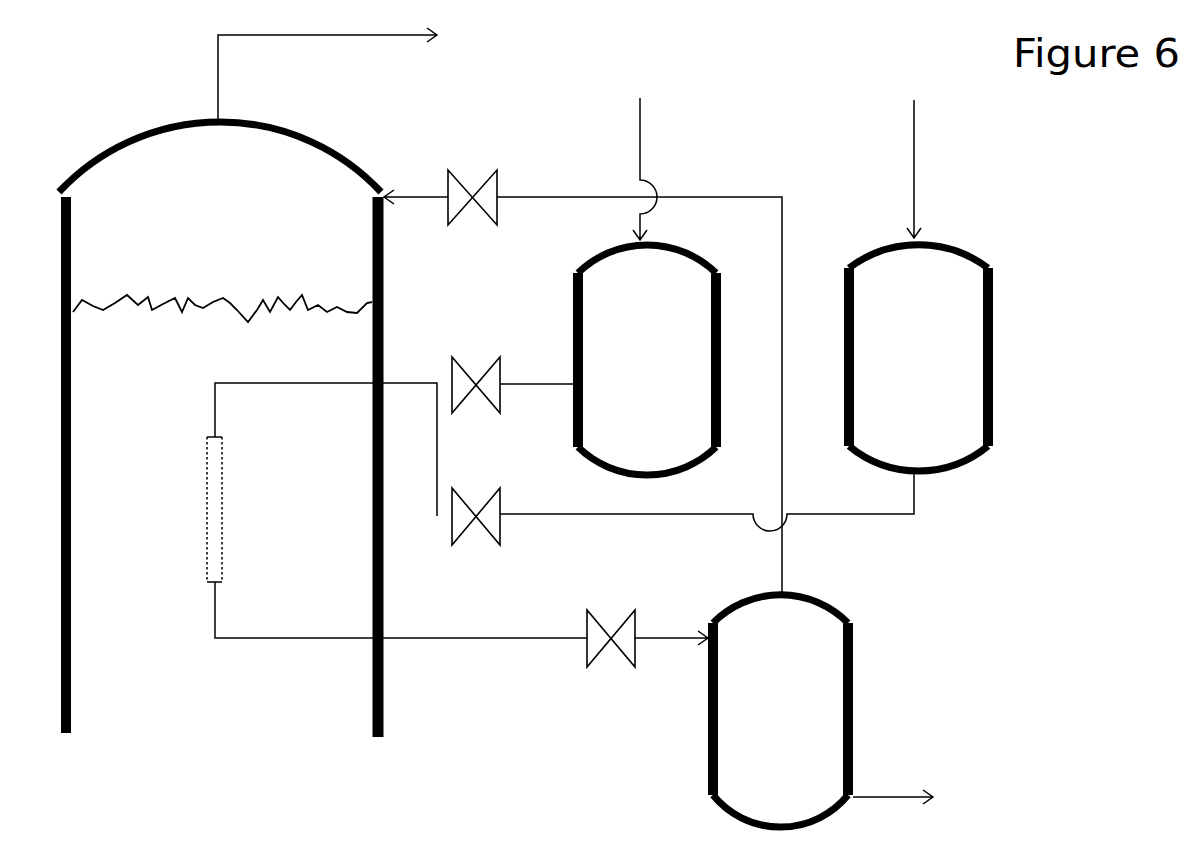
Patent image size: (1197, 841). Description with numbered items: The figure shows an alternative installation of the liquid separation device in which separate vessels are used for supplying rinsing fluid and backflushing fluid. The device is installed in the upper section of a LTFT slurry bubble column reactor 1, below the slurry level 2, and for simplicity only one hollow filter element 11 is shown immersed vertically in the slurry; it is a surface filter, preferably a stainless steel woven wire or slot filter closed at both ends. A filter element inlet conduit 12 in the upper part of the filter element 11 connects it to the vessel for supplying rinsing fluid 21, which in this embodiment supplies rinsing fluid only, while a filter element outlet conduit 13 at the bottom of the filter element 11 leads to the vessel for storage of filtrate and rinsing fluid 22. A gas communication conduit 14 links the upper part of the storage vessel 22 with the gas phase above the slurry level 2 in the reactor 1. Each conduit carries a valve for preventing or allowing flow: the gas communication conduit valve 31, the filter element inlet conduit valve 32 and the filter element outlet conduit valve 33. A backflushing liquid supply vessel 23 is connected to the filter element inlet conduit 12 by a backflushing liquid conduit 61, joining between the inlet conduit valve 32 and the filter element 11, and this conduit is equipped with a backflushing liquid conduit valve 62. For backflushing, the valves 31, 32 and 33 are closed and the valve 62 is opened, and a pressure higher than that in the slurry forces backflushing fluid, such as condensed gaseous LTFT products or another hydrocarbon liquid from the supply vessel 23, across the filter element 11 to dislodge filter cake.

The LTFT slurry bubble column reactor 1 is at (248, 382).
The slurry level 2 is at (222, 289).
The filter element 11 is at (238, 509).
The filter element inlet conduit 12 is at (326, 449).
The filter element outlet conduit 13 is at (461, 613).
The gas communication conduit 14 is at (583, 374).
The vessel for supplying rinsing fluid 21 is at (647, 286).
The vessel for storage of filtrate and rinsing fluid 22 is at (823, 711).
The backflushing liquid supply vessel 23 is at (918, 285).
The gas communication conduit valve 31 is at (474, 168).
The filter element inlet conduit valve 32 is at (513, 361).
The filter element outlet conduit valve 33 is at (612, 617).
The backflushing liquid conduit 61 is at (707, 501).
The backflushing liquid conduit valve 62 is at (476, 495).